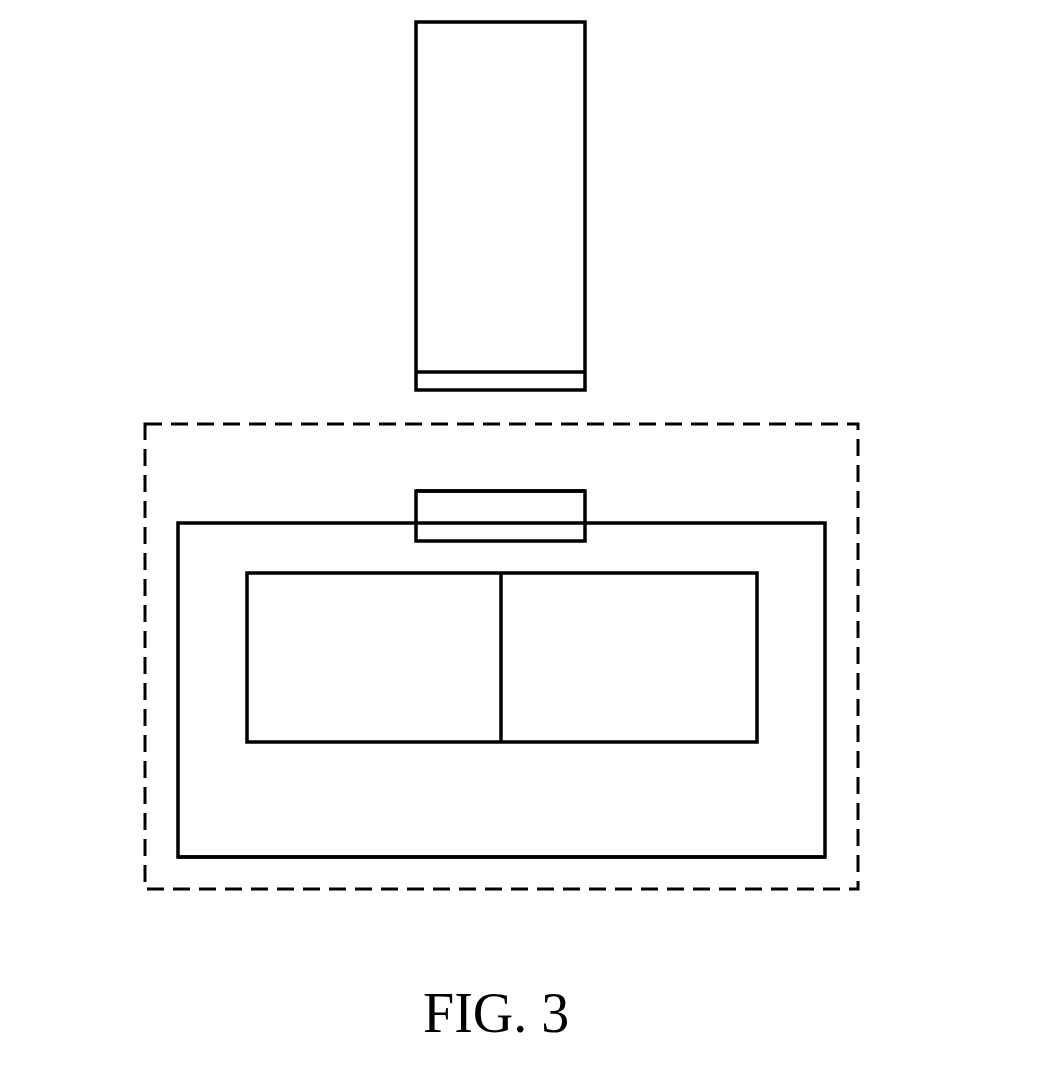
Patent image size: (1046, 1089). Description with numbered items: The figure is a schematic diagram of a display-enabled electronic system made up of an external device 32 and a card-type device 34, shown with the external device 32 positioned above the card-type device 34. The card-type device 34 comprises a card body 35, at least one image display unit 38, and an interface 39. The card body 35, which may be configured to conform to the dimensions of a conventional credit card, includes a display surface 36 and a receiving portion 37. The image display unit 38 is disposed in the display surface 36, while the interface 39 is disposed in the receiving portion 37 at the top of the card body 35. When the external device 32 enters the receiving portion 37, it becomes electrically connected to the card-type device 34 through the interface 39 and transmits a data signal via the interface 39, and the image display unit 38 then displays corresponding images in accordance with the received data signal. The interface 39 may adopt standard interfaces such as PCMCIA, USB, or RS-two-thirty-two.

The external device 32 is at (572, 206).
The card-type device 34 is at (145, 672).
The card body 35 is at (505, 858).
The display surface 36 is at (785, 808).
The receiving portion 37 is at (573, 505).
The image display unit 38 is at (757, 657).
The interface 39 is at (535, 487).